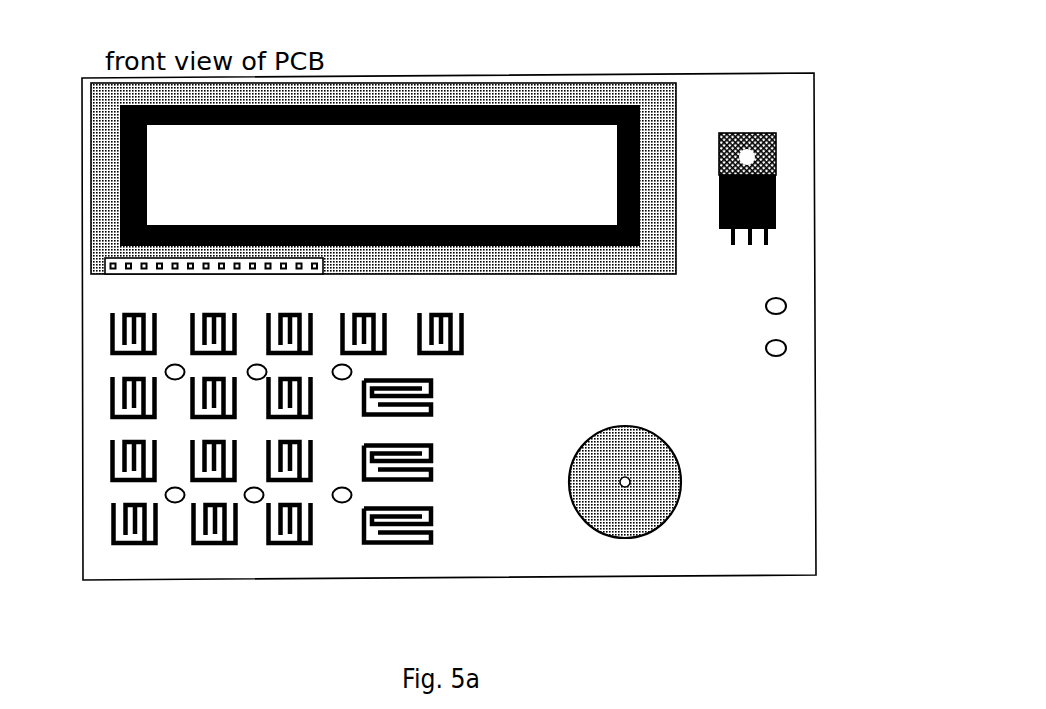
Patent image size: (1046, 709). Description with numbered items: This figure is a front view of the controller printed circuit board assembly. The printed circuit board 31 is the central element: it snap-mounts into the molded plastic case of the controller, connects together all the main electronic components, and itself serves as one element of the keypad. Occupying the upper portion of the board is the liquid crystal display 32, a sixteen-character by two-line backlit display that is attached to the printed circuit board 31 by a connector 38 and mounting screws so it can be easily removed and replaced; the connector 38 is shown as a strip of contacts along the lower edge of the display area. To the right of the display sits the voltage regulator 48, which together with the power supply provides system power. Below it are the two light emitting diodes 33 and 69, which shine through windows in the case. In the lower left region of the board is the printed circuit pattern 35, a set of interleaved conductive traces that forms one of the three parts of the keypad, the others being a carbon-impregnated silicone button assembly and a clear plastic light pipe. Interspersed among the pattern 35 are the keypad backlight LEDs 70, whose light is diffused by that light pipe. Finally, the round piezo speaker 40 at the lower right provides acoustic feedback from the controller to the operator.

The printed circuit board 31 is at (828, 708).
The liquid crystal display 32 is at (679, 122).
The light emitting diode 33 is at (795, 298).
The printed circuit pattern 35 is at (428, 548).
The connector 38 is at (115, 278).
The piezo speaker 40 is at (686, 453).
The voltage regulator 48 is at (753, 128).
The light emitting diode 69 is at (795, 345).
The keypad backlight LED 70 is at (337, 513).